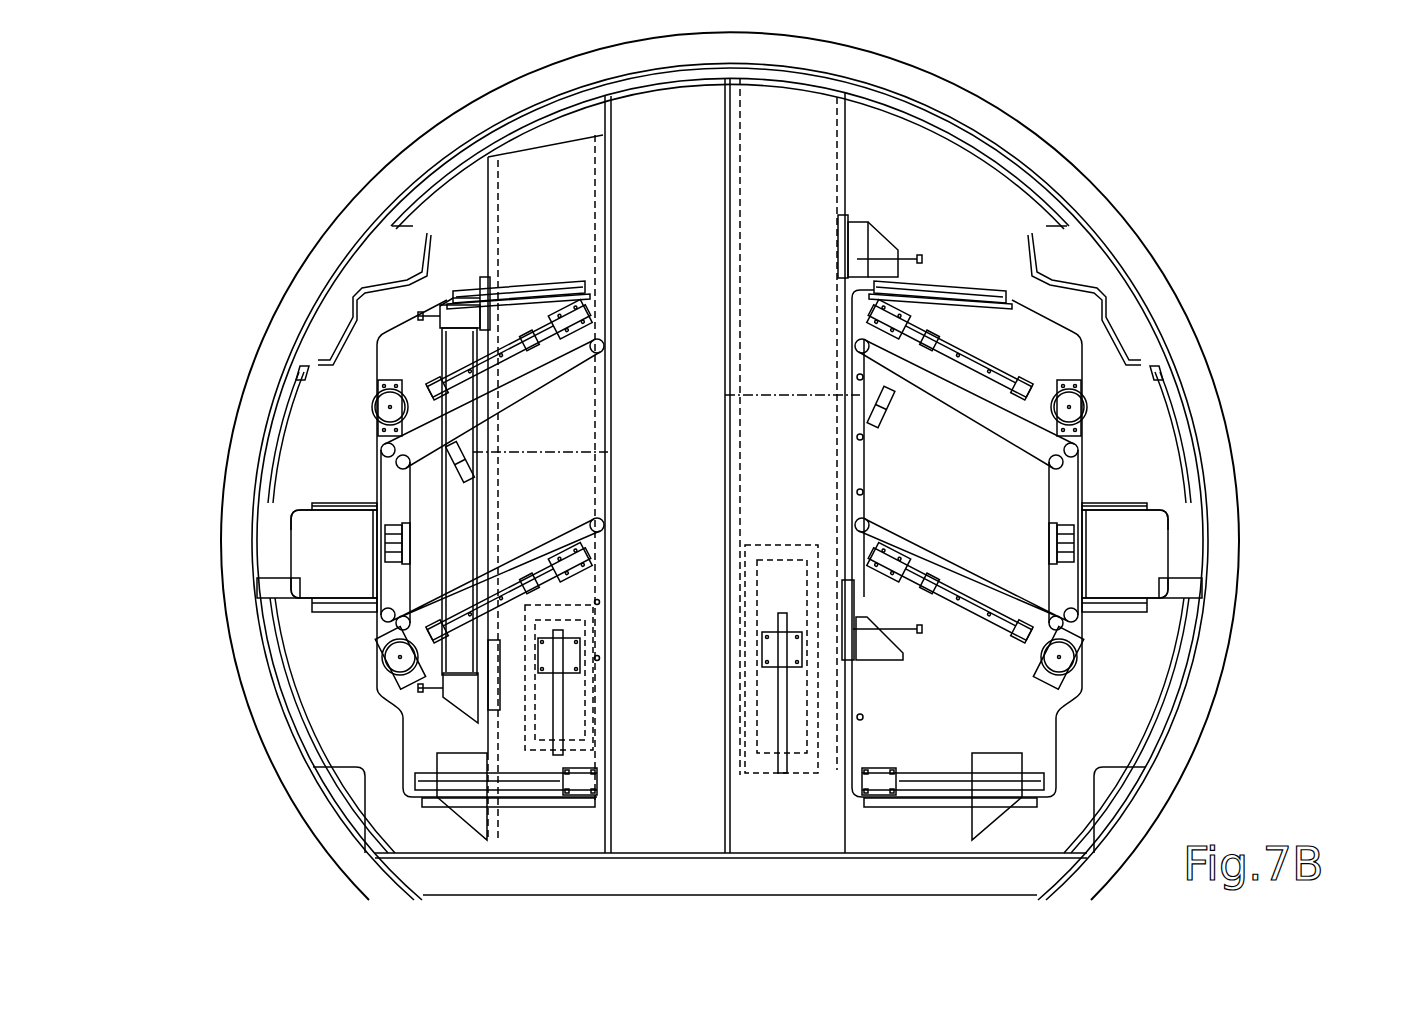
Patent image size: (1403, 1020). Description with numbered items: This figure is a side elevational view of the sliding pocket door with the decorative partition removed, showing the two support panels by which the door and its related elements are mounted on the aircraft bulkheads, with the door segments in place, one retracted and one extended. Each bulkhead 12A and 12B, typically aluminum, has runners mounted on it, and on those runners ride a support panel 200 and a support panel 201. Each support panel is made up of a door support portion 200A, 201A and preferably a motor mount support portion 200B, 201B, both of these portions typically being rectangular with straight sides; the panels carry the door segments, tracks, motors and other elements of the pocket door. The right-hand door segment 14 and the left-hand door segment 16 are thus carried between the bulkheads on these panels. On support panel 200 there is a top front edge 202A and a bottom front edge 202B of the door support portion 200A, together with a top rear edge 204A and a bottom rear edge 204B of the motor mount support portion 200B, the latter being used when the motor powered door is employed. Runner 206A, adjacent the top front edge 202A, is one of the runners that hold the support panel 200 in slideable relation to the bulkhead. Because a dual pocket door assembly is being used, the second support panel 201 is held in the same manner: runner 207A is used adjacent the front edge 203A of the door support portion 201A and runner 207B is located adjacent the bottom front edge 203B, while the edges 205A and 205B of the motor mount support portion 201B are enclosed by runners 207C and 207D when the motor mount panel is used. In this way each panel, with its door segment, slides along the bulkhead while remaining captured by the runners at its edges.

The bulkhead 12A is at (939, 194).
The bulkhead 12B is at (484, 254).
The door segment 14 is at (799, 256).
The door segment 16 is at (557, 226).
The support panel 200 is at (1090, 458).
The door support portion 200A is at (987, 501).
The motor mount support portion 200B is at (1157, 567).
The support panel 201 is at (382, 707).
The door support portion 201A is at (470, 749).
The motor mount support portion 201B is at (361, 567).
The top front edge 202A is at (1014, 296).
The bottom front edge 202B is at (1046, 804).
The front edge 203A is at (590, 293).
The bottom front edge 203B is at (410, 800).
The top rear edge 204A is at (1160, 515).
The bottom rear edge 204B is at (1160, 600).
The edge 205A is at (300, 515).
The edge 205B is at (300, 600).
The runner 206A is at (892, 267).
The runner 207A is at (570, 281).
The runner 207B is at (591, 808).
The runner 207C is at (337, 504).
The runner 207D is at (343, 613).